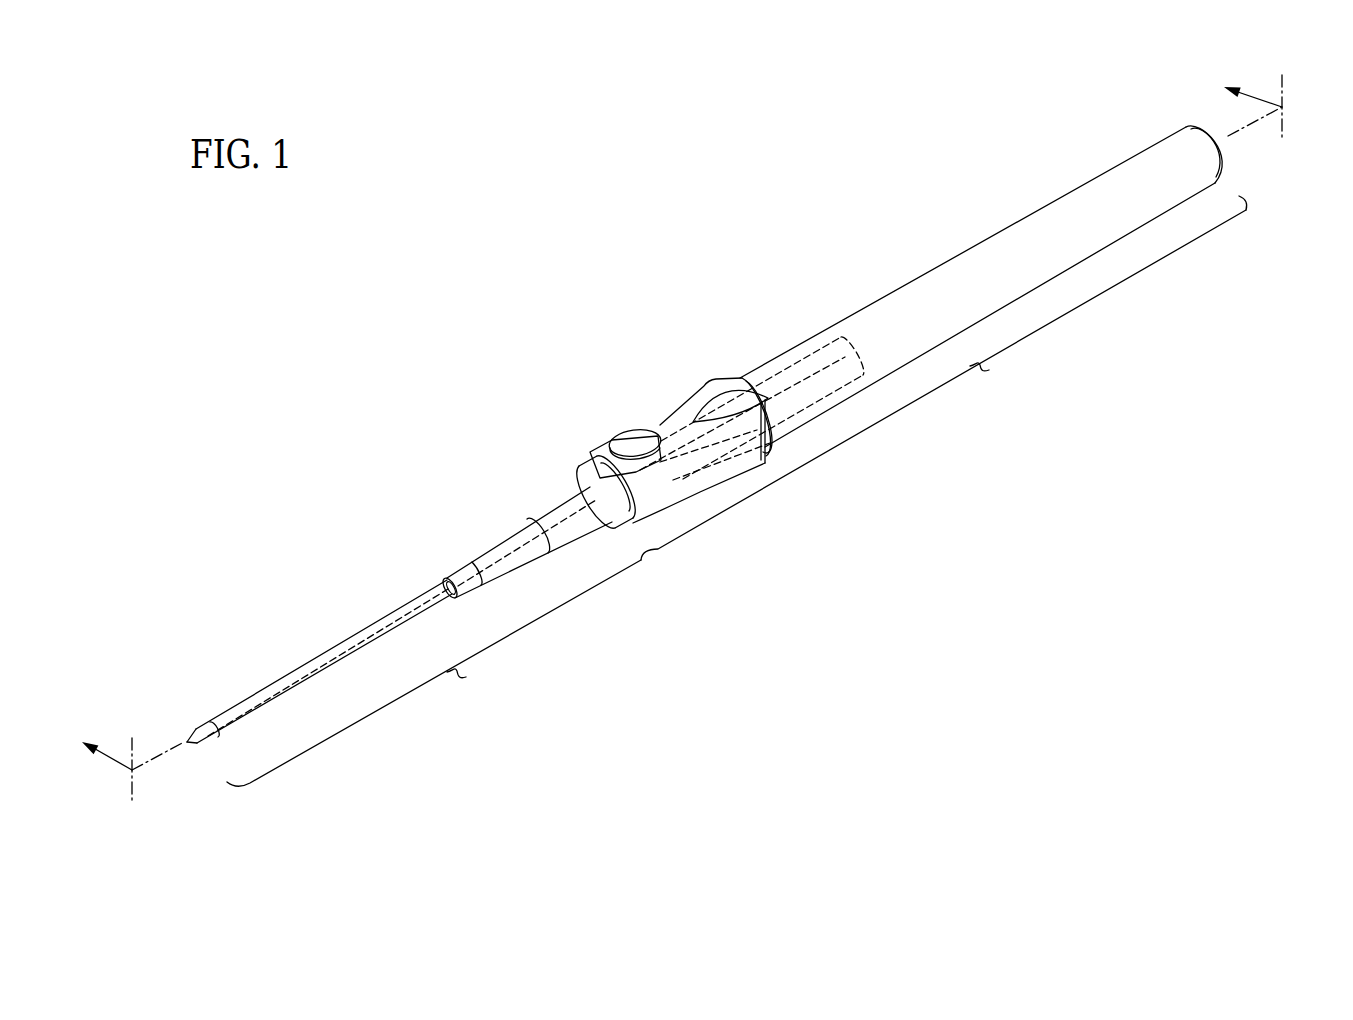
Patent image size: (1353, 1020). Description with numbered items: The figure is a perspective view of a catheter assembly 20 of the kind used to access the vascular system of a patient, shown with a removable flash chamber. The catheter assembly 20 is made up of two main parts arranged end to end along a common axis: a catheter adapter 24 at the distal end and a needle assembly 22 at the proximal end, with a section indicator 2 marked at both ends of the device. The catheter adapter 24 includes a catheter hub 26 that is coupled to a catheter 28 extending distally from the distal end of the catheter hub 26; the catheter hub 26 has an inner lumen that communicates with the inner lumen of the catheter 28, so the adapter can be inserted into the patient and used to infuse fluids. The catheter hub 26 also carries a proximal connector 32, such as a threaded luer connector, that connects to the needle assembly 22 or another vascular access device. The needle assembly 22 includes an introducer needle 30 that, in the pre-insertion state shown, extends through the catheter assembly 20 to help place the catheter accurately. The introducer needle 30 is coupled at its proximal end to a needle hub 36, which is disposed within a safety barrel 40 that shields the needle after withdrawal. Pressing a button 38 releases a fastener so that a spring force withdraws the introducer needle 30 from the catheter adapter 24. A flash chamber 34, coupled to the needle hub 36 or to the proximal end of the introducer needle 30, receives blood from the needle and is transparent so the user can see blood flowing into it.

The catheter assembly 20 is at (928, 585).
The needle assembly 22 is at (944, 378).
The catheter adapter 24 is at (434, 673).
The catheter hub 26 is at (514, 536).
The catheter 28 is at (323, 656).
The introducer needle 30 is at (515, 549).
The proximal connector 32 is at (578, 468).
The flash chamber 34 is at (186, 740).
The needle hub 36 is at (770, 394).
The button 38 is at (630, 443).
The safety barrel 40 is at (1019, 240).
The section line 2 is at (693, 439).